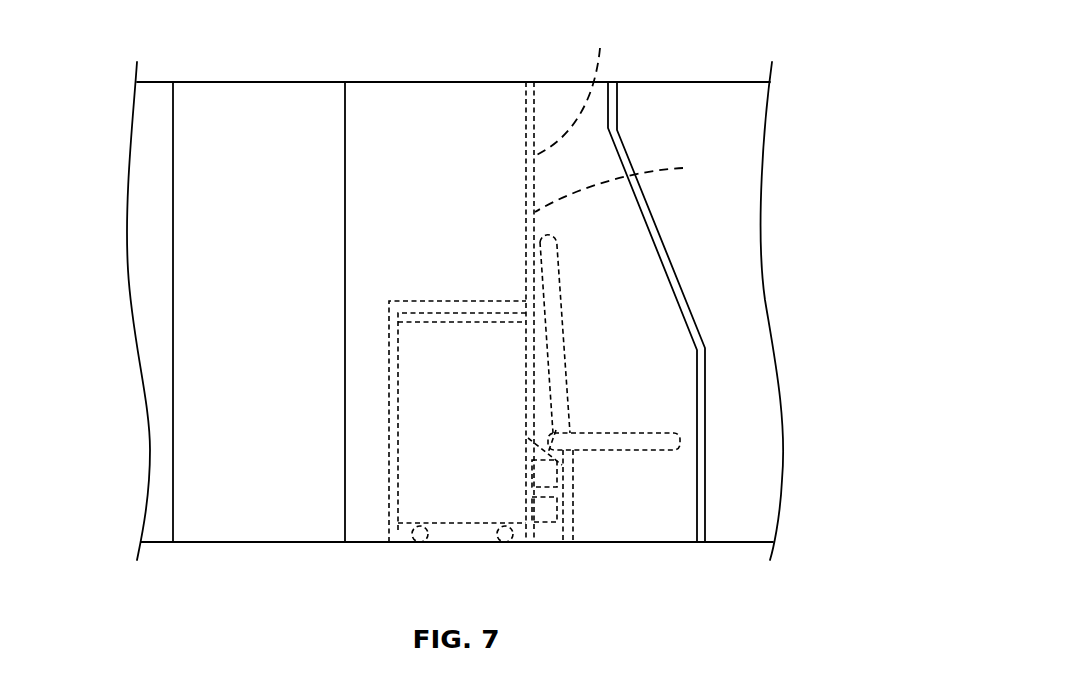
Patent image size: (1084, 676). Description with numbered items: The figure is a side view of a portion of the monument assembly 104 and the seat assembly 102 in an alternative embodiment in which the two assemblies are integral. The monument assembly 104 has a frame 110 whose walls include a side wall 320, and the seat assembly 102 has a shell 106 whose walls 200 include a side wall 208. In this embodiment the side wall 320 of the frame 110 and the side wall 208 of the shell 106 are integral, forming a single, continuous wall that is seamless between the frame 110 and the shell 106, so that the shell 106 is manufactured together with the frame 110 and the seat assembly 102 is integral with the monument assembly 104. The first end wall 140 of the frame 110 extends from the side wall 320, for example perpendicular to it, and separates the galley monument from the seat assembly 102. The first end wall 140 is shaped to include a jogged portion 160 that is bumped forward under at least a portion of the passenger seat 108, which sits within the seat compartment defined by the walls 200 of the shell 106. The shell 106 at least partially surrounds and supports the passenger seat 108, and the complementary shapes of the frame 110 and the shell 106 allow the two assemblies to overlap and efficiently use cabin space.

The seat assembly 102 is at (688, 289).
The monument assembly 104 is at (330, 141).
The shell 106 is at (700, 370).
The passenger seat 108 is at (635, 433).
The frame 110 is at (535, 112).
The first end wall 140 is at (634, 184).
The jogged portion 160 is at (546, 446).
The walls 200 is at (657, 247).
The side wall 208 is at (653, 505).
The side wall 320 is at (365, 483).